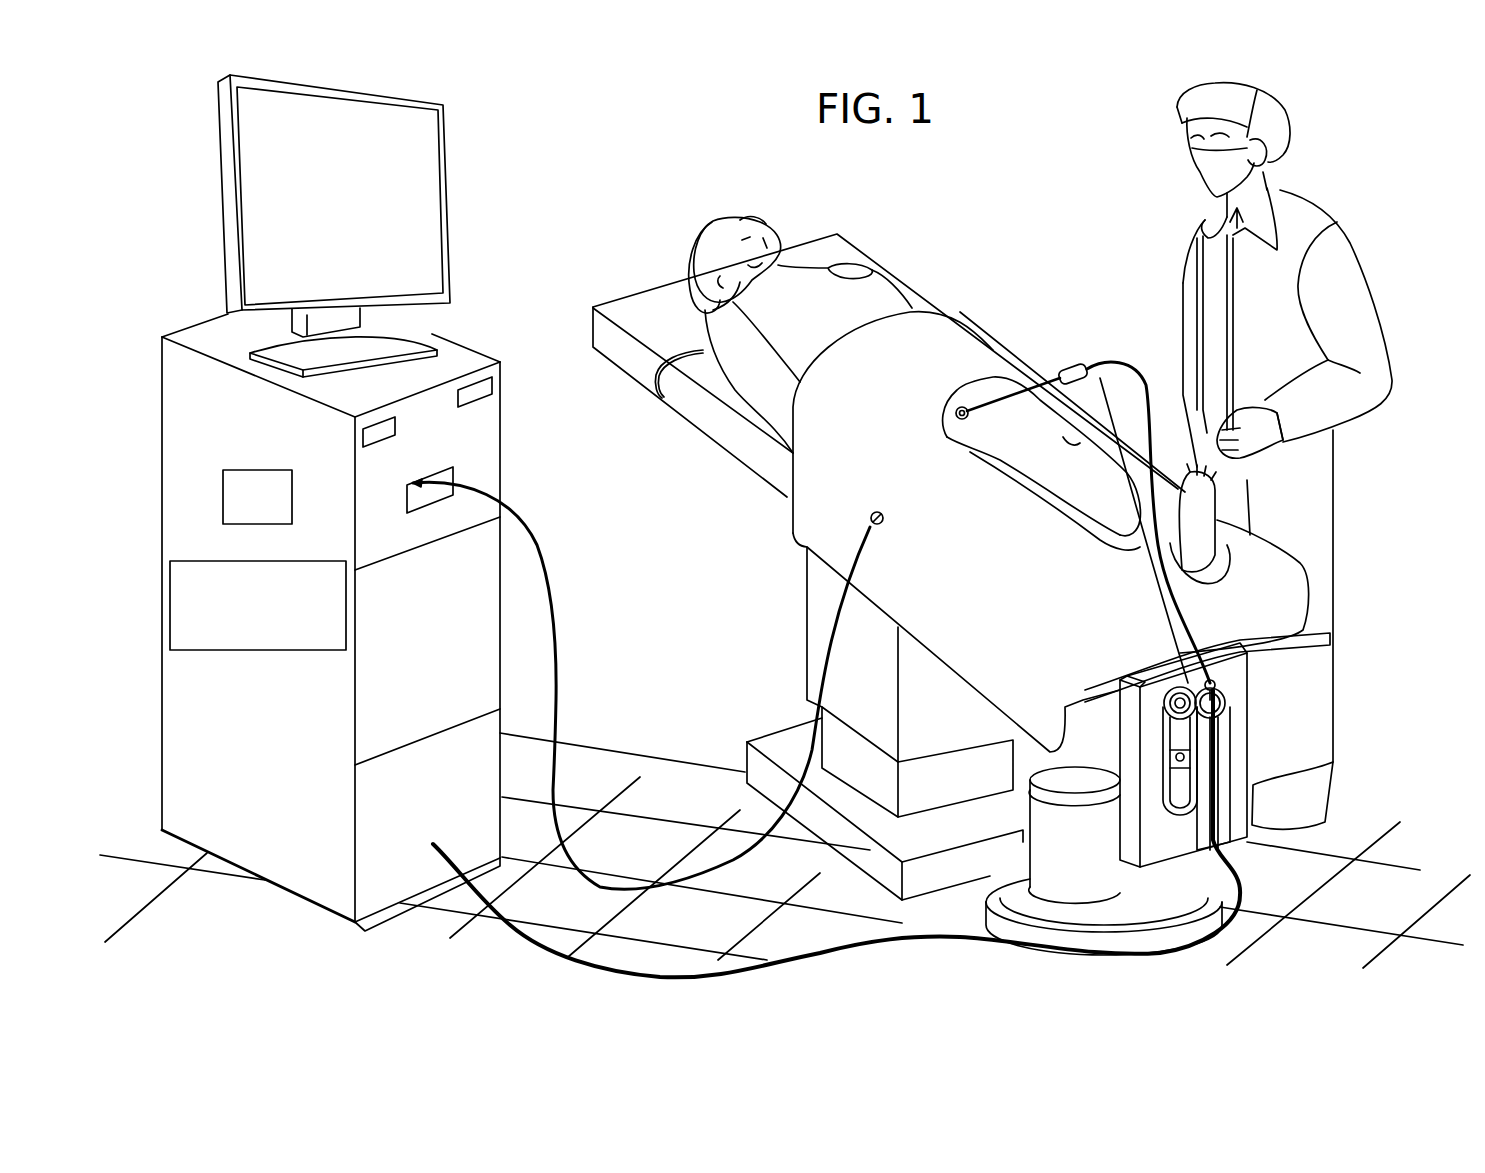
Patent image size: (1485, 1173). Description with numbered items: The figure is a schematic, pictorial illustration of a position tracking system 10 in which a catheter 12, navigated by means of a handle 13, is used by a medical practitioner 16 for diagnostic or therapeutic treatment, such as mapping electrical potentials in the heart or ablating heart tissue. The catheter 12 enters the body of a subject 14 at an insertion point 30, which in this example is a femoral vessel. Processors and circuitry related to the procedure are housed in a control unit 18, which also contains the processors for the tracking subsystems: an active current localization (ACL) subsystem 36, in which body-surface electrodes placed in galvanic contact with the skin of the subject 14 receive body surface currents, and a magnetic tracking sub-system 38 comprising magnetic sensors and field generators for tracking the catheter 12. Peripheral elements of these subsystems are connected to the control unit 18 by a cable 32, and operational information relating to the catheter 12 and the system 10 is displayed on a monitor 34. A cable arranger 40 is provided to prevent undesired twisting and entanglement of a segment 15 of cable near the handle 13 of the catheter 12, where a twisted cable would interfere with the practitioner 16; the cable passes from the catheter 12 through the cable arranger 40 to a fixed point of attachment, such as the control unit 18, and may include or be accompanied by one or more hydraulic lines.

The position tracking system 10 is at (170, 140).
The catheter 12 is at (1062, 366).
The handle 13 is at (1088, 360).
The subject 14 is at (700, 232).
The segment of cable 15 is at (1093, 548).
The medical practitioner 16 is at (1323, 204).
The control unit 18 is at (162, 693).
The insertion point 30 is at (957, 410).
The cable 32 is at (550, 555).
The monitor 34 is at (452, 140).
The active current localization (ACL) subsystem 36 is at (258, 468).
The magnetic tracking sub-system 38 is at (258, 652).
The cable arranger 40 is at (1153, 807).